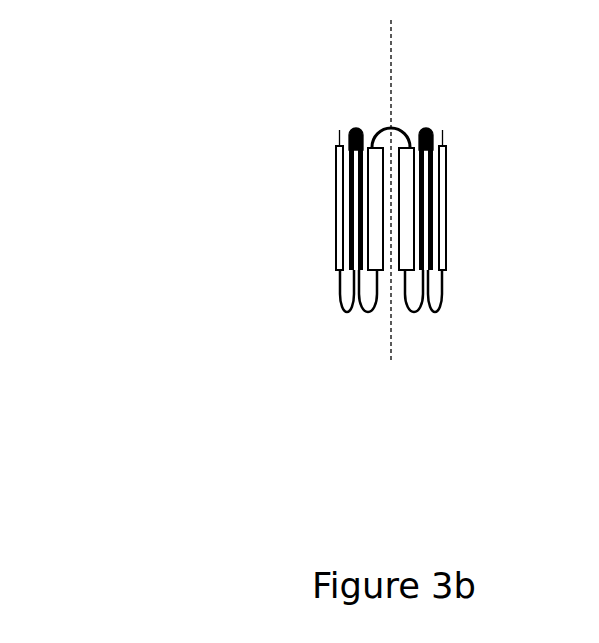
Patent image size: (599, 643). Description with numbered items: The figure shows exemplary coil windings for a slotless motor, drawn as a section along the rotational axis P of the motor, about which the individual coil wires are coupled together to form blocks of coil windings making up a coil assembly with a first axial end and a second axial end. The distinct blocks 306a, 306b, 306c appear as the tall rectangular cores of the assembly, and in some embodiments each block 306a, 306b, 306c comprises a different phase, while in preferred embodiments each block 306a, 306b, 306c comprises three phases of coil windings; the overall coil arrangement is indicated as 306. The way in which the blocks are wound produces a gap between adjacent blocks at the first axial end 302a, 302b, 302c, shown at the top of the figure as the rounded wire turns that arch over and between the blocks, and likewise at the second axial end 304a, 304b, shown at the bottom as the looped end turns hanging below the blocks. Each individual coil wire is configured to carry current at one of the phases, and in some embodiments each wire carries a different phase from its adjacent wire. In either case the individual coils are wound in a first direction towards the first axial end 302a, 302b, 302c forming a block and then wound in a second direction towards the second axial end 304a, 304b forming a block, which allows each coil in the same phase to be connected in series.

The rotational axis P is at (390, 183).
The first axial end of coil winding block 302a is at (365, 120).
The first axial end of coil winding block 302b is at (413, 128).
The first axial end of coil winding block 302c is at (434, 125).
The second axial end of coil windings 304a is at (358, 313).
The second axial end of coil windings 304b is at (425, 312).
The magnetic core 306 is at (239, 138).
The block 306a is at (406, 215).
The block 306b is at (335, 203).
The block 306c is at (380, 266).